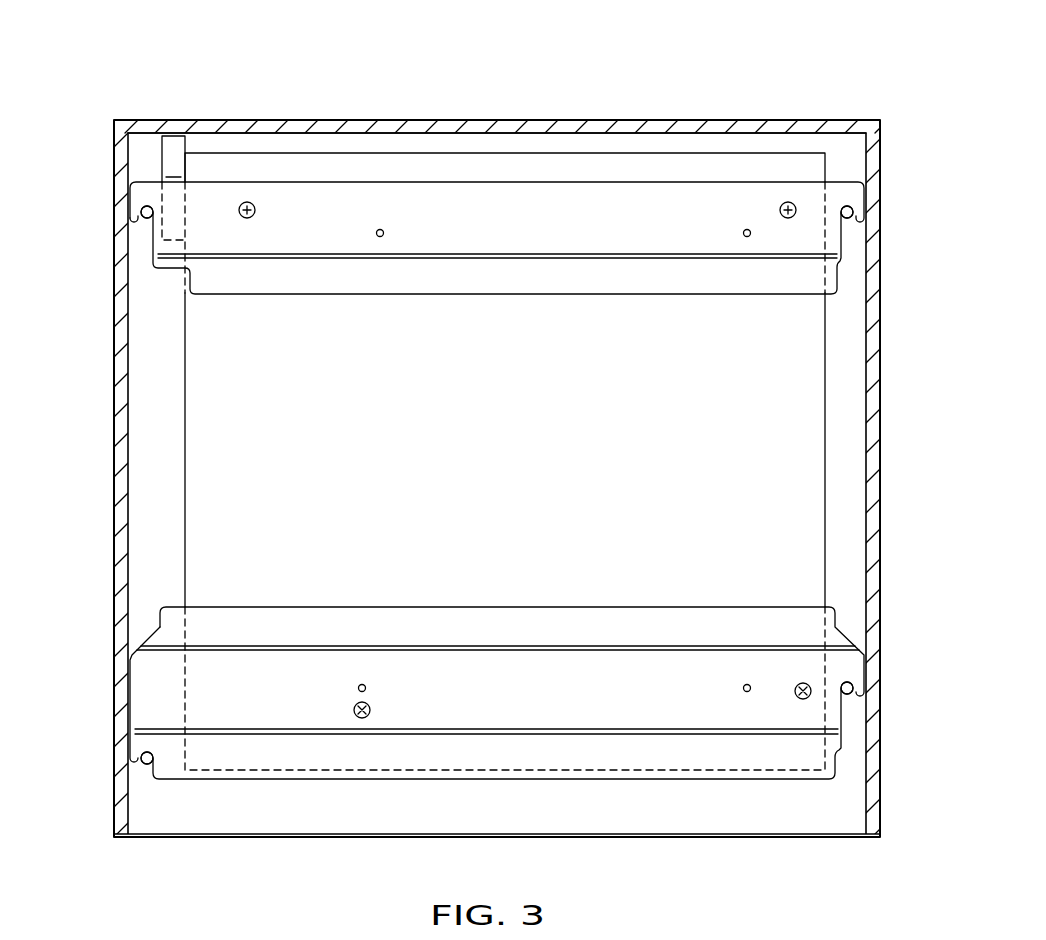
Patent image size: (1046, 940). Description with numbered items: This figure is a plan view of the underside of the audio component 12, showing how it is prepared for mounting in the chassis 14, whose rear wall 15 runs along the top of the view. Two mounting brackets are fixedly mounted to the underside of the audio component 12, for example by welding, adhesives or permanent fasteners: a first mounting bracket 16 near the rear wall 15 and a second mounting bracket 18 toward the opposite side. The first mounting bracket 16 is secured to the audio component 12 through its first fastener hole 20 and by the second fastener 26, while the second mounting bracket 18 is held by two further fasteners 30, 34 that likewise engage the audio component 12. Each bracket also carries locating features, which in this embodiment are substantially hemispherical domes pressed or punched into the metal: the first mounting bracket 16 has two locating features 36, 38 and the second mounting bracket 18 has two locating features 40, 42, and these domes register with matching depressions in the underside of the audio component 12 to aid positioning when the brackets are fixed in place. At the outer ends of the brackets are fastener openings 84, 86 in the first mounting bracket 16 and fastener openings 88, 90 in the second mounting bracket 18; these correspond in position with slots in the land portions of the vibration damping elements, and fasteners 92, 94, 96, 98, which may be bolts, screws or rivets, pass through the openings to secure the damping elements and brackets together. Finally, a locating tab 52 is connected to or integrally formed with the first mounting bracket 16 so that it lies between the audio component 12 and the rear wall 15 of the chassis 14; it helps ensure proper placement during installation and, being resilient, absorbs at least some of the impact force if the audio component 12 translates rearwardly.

The audio component 12 is at (805, 468).
The chassis 14 is at (635, 89).
The rear wall 15 is at (340, 127).
The first mounting bracket 16 is at (555, 310).
The second mounting bracket 18 is at (590, 595).
The first fastener hole 20 is at (790, 219).
The second fastener 26 is at (255, 215).
The fastener 30 is at (800, 699).
The fastener 34 is at (370, 708).
The locating feature 36 is at (746, 238).
The locating feature 38 is at (383, 238).
The locating feature 40 is at (747, 684).
The locating feature 42 is at (362, 684).
The locating tab 52 is at (175, 145).
The fastener opening 84 is at (857, 216).
The fastener opening 86 is at (140, 217).
The fastener opening 88 is at (853, 695).
The fastener opening 90 is at (140, 757).
The fastener 92 is at (848, 218).
The fastener 94 is at (146, 220).
The fastener 96 is at (850, 695).
The fastener 98 is at (148, 765).